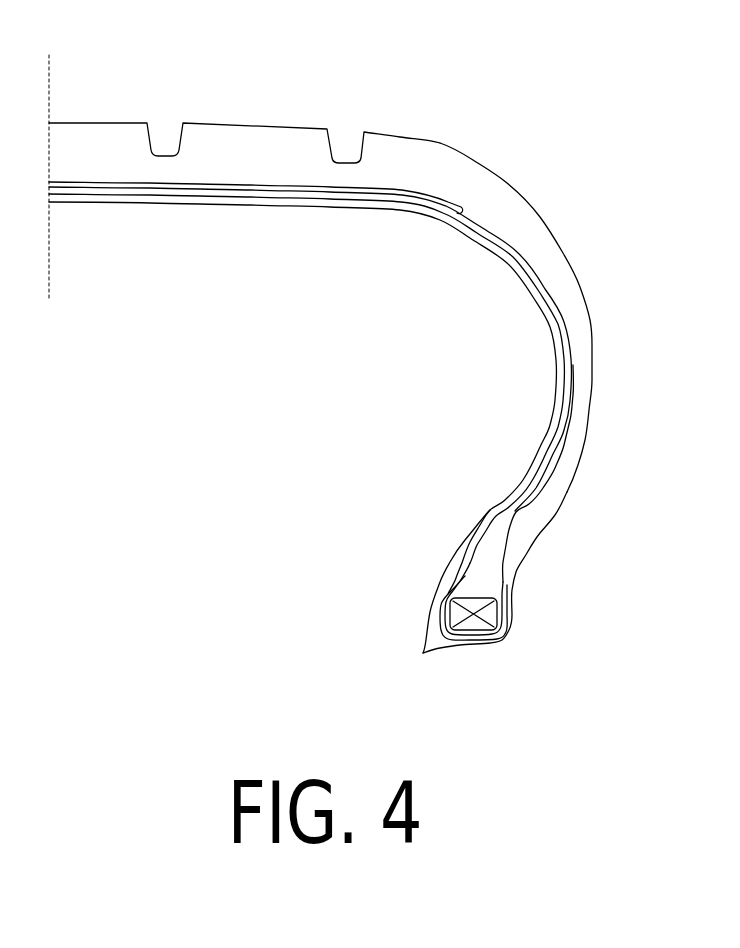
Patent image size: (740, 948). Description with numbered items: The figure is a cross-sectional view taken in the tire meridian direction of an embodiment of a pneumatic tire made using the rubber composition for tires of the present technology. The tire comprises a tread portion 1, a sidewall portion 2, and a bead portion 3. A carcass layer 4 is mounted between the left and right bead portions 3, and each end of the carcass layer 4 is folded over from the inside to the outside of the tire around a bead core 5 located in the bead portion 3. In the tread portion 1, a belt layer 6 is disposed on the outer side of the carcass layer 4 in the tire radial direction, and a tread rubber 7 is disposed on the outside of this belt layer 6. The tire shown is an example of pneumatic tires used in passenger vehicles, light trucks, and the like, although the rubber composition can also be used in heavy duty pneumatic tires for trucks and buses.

The tread portion 1 is at (126, 116).
The sidewall portion 2 is at (593, 330).
The bead portion 3 is at (535, 573).
The carcass layer 4 is at (575, 363).
The bead core 5 is at (500, 619).
The belt layer 6 is at (433, 192).
The tread rubber 7 is at (267, 142).